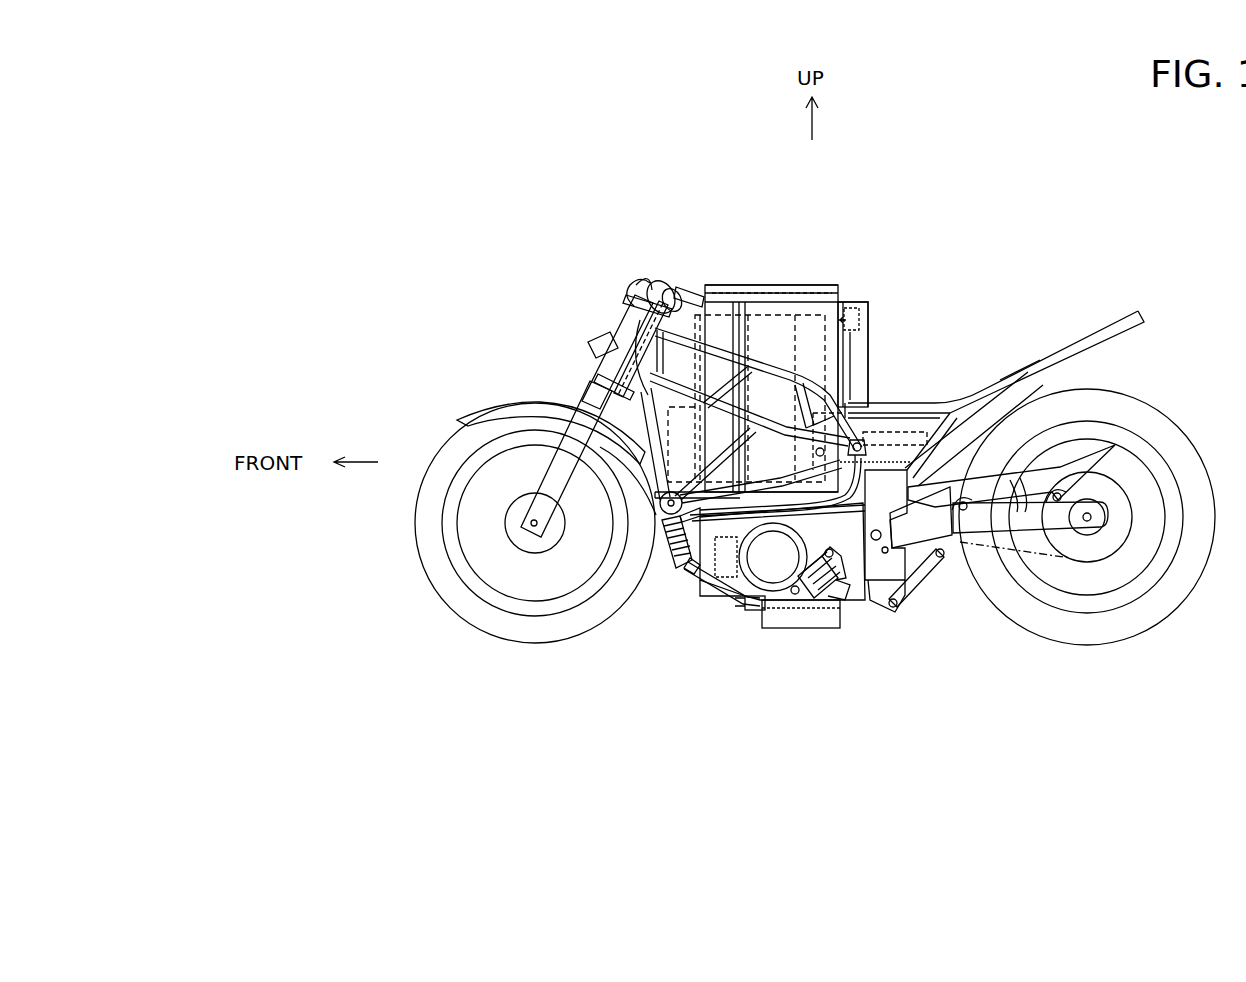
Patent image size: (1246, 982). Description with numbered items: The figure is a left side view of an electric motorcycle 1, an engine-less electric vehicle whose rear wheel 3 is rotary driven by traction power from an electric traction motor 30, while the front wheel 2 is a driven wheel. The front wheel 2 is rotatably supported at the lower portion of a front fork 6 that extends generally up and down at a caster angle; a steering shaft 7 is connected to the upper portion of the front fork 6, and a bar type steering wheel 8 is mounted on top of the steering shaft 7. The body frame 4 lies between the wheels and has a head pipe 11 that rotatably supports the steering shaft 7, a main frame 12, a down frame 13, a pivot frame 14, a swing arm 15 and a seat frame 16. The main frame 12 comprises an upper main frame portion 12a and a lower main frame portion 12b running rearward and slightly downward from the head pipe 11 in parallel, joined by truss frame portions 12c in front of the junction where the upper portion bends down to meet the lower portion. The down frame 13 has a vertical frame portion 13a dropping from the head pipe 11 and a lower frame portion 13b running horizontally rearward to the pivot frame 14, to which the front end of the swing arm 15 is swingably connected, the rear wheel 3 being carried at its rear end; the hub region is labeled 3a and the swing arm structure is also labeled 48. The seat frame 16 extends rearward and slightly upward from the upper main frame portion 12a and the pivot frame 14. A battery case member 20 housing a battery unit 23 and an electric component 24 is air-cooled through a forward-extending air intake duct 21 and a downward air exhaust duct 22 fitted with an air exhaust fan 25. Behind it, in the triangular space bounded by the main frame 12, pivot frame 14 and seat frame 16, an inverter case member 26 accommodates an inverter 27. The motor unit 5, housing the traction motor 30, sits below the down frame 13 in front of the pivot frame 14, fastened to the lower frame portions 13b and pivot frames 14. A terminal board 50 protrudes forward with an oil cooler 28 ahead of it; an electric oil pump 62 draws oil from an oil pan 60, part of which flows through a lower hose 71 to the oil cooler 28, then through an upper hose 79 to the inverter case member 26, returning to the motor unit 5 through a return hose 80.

The electric motorcycle 1 is at (1095, 222).
The front wheel 2 is at (470, 612).
The rear wheel 3 is at (1160, 612).
The rear wheel hub 3a is at (1102, 555).
The body frame 4 is at (1080, 340).
The motor unit 5 is at (837, 638).
The front fork 6 is at (545, 412).
The steering shaft 7 is at (636, 290).
The steering wheel 8 is at (690, 300).
The head pipe 11 is at (642, 352).
The main frame 12 is at (900, 226).
The upper main frame portion 12a is at (760, 420).
The lower main frame portion 12b is at (790, 400).
The truss frame portion 12c is at (735, 420).
The down frame 13 is at (712, 678).
The vertical frame portion 13a is at (650, 490).
The lower frame portion 13b is at (700, 580).
The pivot frame 14 is at (882, 560).
The swing arm 15 is at (915, 530).
The seat frame 16 is at (1030, 366).
The battery case member 20 is at (866, 404).
The air intake duct 21 is at (612, 340).
The air exhaust duct 22 is at (868, 310).
The battery unit 23 is at (810, 350).
The electric component 24 is at (840, 290).
The air exhaust fan 25 is at (868, 326).
The inverter case member 26 is at (958, 432).
The inverter 27 is at (915, 440).
The oil cooler 28 is at (665, 540).
The electric traction motor 30 is at (778, 575).
The swing arm 48 is at (1043, 560).
The terminal board 50 is at (735, 570).
The oil pan 60 is at (800, 622).
The electric oil pump 62 is at (825, 595).
The lower hose 71 is at (720, 605).
The upper hose 79 is at (795, 490).
The return hose 80 is at (815, 505).